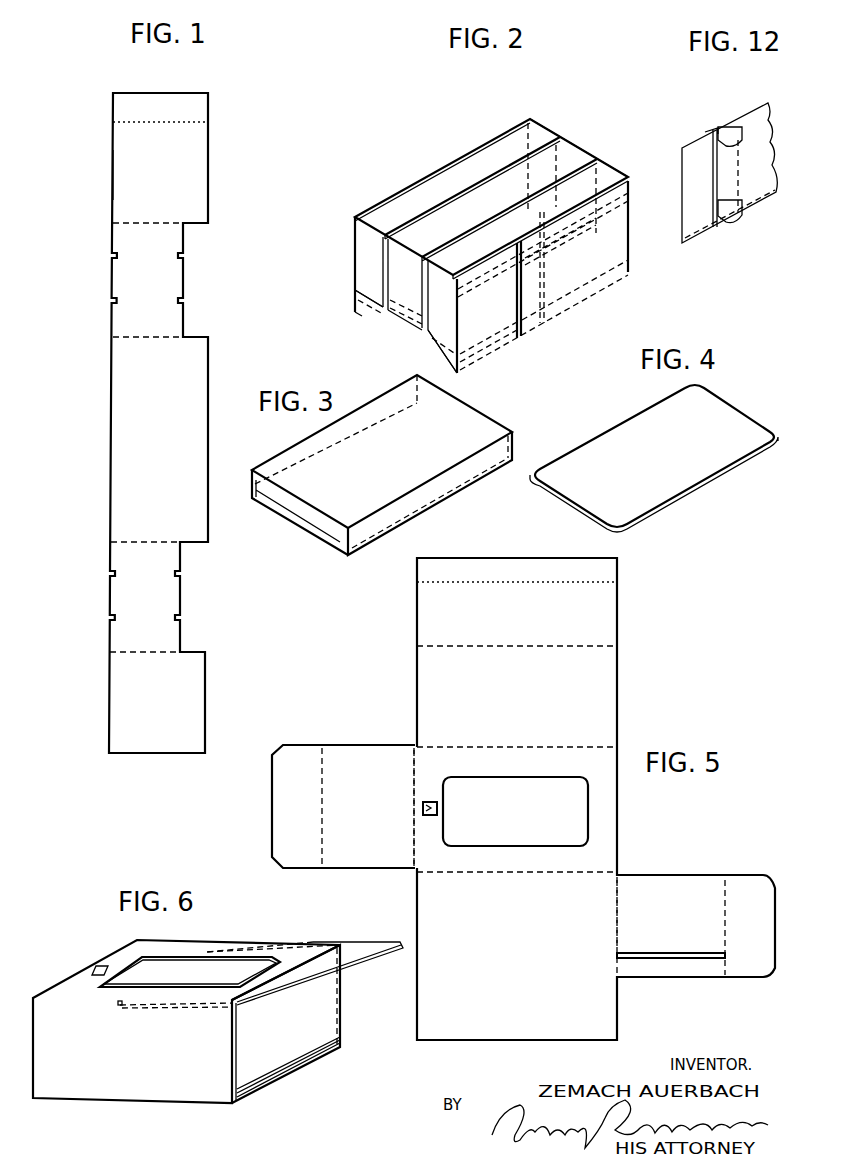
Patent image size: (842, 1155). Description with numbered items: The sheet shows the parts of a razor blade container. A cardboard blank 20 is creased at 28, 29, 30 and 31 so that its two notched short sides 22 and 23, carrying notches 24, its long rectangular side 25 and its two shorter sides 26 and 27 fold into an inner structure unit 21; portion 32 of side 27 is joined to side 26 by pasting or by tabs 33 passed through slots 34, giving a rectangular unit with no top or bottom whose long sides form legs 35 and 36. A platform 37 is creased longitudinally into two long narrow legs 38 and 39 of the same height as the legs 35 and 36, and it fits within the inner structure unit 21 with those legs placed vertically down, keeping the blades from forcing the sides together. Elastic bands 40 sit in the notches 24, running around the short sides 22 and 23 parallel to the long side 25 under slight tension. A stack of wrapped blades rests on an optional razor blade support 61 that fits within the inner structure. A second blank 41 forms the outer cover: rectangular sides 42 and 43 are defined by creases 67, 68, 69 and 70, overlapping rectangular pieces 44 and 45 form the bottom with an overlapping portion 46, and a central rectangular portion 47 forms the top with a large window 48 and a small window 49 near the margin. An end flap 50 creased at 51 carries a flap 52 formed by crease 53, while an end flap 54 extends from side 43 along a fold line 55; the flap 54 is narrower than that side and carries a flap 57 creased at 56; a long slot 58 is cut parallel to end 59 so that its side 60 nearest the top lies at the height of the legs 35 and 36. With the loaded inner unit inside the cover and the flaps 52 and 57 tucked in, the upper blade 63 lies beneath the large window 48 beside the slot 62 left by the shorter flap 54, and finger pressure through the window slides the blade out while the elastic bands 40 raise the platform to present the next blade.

In FIG. 1, the blank 20 is at (228, 158).
In FIG. 2, the inner structure unit 21 is at (433, 152).
In FIG. 1, the short side 22 is at (135, 280).
In FIG. 1, the short side 23 is at (130, 601).
In FIG. 1, the notches 24 is at (112, 256).
In FIG. 1, the long rectangular side 25 is at (135, 433).
In FIG. 2, the long rectangular side 25 is at (500, 155).
In FIG. 1, the shorter side 26 is at (140, 692).
In FIG. 2, the shorter side 26 is at (483, 337).
In FIG. 1, the shorter side 27 is at (128, 165).
In FIG. 2, the shorter side 27 is at (580, 282).
In FIG. 1, the crease 28 is at (118, 652).
In FIG. 1, the crease 29 is at (118, 542).
In FIG. 1, the crease 30 is at (120, 337).
In FIG. 1, the crease 31 is at (128, 222).
In FIG. 1, the portion 32 is at (128, 107).
In FIG. 12, the tabs 33 is at (737, 125).
In FIG. 12, the slots 34 is at (713, 128).
In FIG. 1, the leg 35 is at (197, 215).
In FIG. 2, the leg 35 is at (453, 359).
In FIG. 1, the leg 36 is at (193, 345).
In FIG. 2, the leg 36 is at (360, 304).
In FIG. 3, the platform 37 is at (450, 423).
In FIG. 3, the leg 38 is at (350, 541).
In FIG. 3, the leg 39 is at (258, 487).
In FIG. 2, the elastic bands 40 is at (457, 228).
In FIG. 5, the blank 41 is at (633, 687).
In FIG. 5, the rectangular side 42 is at (457, 684).
In FIG. 6, the rectangular side 42 is at (100, 1073).
In FIG. 5, the rectangular side 43 is at (440, 911).
In FIG. 5, the rectangular piece 44 is at (435, 613).
In FIG. 5, the rectangular piece 45 is at (592, 1011).
In FIG. 5, the overlapping portion 46 is at (598, 573).
In FIG. 5, the central rectangular portion 47 is at (437, 763).
In FIG. 6, the central rectangular portion 47 is at (78, 985).
In FIG. 5, the large window 48 is at (600, 792).
In FIG. 6, the large window 48 is at (180, 955).
In FIG. 5, the small window 49 is at (425, 810).
In FIG. 6, the small window 49 is at (100, 967).
In FIG. 5, the end flap 50 is at (365, 770).
In FIG. 5, the crease 51 is at (412, 762).
In FIG. 5, the flap 52 is at (295, 783).
In FIG. 5, the crease 53 is at (318, 808).
In FIG. 5, the end flap 54 is at (668, 896).
In FIG. 6, the end flap 54 is at (310, 1018).
In FIG. 5, the fold line 55 is at (615, 893).
In FIG. 5, the crease 56 is at (725, 893).
In FIG. 5, the flap 57 is at (735, 960).
In FIG. 5, the long slot 58 is at (690, 957).
In FIG. 6, the long slot 58 is at (287, 1055).
In FIG. 5, the end 59 is at (715, 980).
In FIG. 5, the side of slot 60 is at (660, 952).
In FIG. 4, the razor blade support 61 is at (642, 432).
In FIG. 5, the slot 62 is at (620, 875).
In FIG. 6, the slot 62 is at (338, 958).
In FIG. 6, the upper blade 63 is at (145, 958).
In FIG. 5, the crease 67 is at (428, 647).
In FIG. 5, the crease 68 is at (438, 747).
In FIG. 5, the crease 69 is at (440, 872).
In FIG. 5, the crease 70 is at (452, 1003).